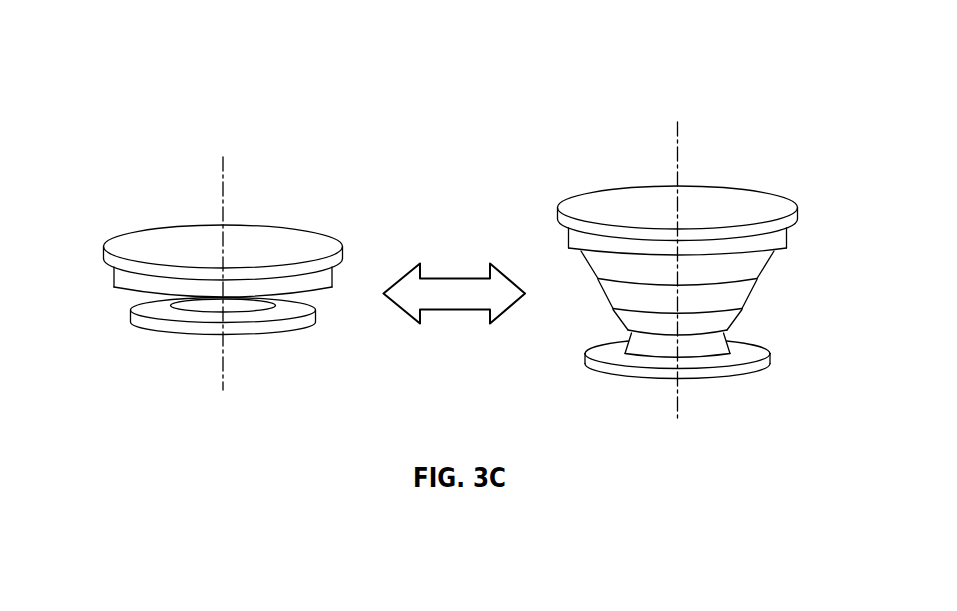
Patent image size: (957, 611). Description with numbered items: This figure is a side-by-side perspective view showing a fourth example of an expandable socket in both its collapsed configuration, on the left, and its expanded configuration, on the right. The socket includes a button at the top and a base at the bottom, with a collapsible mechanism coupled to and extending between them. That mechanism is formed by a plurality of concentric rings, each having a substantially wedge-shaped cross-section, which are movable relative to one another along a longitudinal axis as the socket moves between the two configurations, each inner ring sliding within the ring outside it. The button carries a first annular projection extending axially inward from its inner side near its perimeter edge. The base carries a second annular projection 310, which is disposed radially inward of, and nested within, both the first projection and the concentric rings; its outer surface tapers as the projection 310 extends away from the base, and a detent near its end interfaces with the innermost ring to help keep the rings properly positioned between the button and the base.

The second annular projection 310 is at (712, 338).